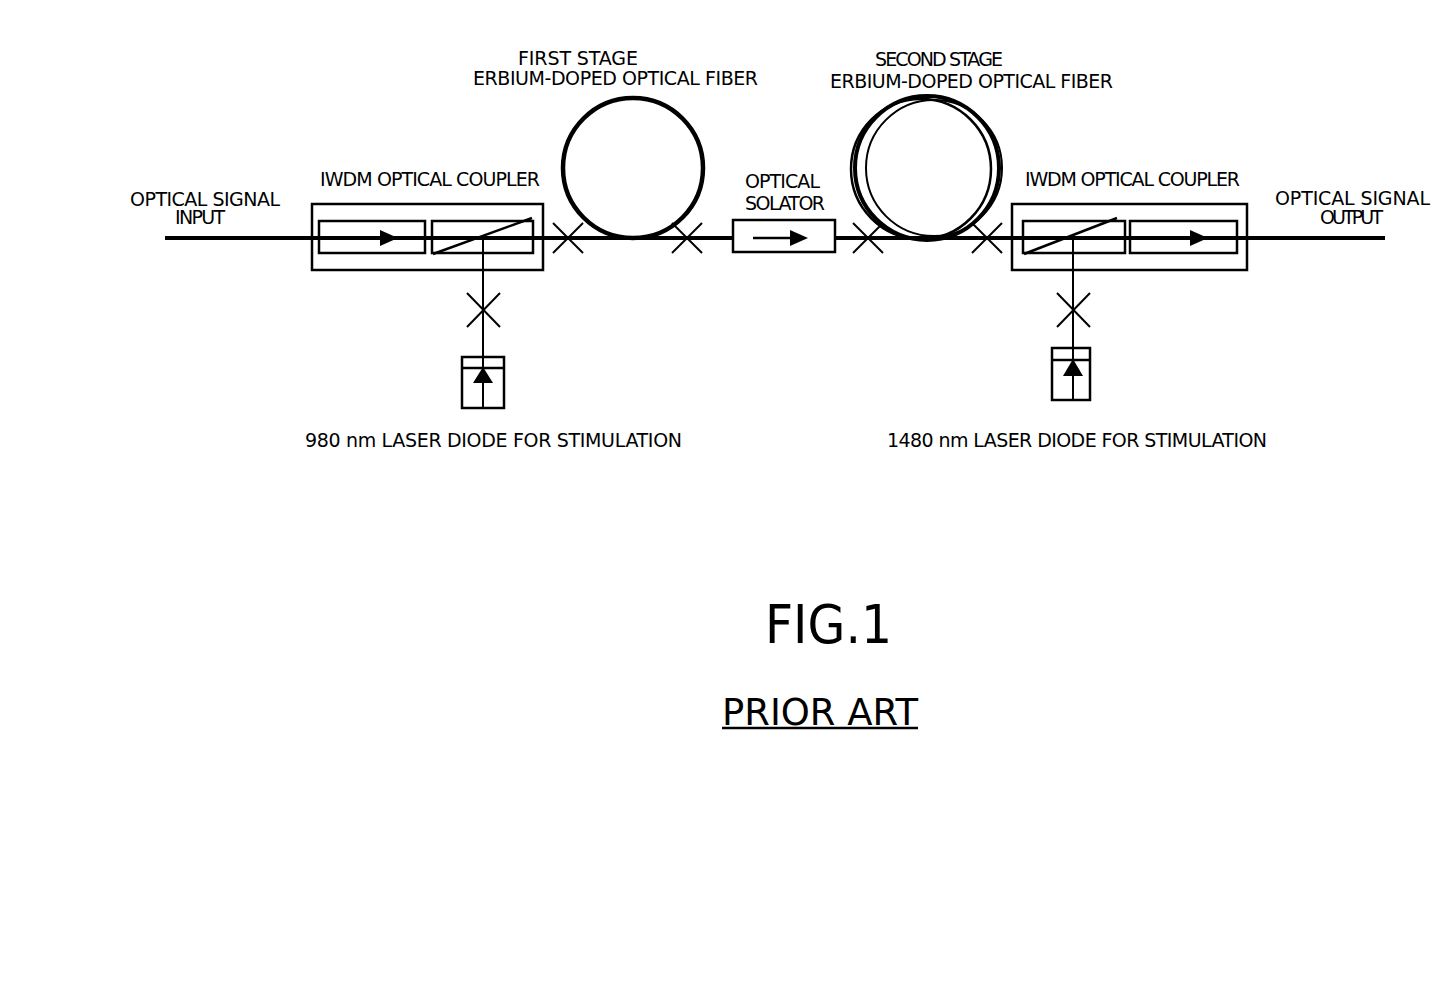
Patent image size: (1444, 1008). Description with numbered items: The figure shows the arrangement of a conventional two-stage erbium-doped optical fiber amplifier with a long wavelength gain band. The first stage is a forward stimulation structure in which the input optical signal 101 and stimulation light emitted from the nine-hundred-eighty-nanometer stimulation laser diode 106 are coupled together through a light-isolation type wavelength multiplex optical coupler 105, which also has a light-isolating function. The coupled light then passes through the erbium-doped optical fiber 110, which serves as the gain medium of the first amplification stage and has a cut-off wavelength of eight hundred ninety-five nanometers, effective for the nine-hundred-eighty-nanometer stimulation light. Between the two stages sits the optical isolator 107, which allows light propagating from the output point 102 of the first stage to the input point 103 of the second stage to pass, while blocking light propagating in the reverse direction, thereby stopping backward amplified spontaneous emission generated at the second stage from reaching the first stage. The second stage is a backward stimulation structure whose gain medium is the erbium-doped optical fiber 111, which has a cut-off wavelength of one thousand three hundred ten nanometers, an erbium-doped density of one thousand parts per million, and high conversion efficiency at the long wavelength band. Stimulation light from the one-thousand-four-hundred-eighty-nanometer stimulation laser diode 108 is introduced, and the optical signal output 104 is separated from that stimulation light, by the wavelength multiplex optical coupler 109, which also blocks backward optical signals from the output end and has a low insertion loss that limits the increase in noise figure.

The input optical signal 101 is at (252, 245).
The output point of the first stage 102 is at (725, 243).
The input point of the second stage 103 is at (847, 245).
The optical signal output 104 is at (1295, 247).
The light-isolation type wavelength multiplex optical coupler 105 is at (327, 278).
The 980 nm stimulation laser diode 106 is at (455, 368).
The optical isolator 107 is at (777, 257).
The 1480 nm stimulation laser diode 108 is at (1043, 358).
The wavelength multiplex optical coupler 109 is at (1215, 277).
The erbium-doped optical fiber 110 is at (565, 127).
The erbium-doped optical fiber 111 is at (1005, 133).